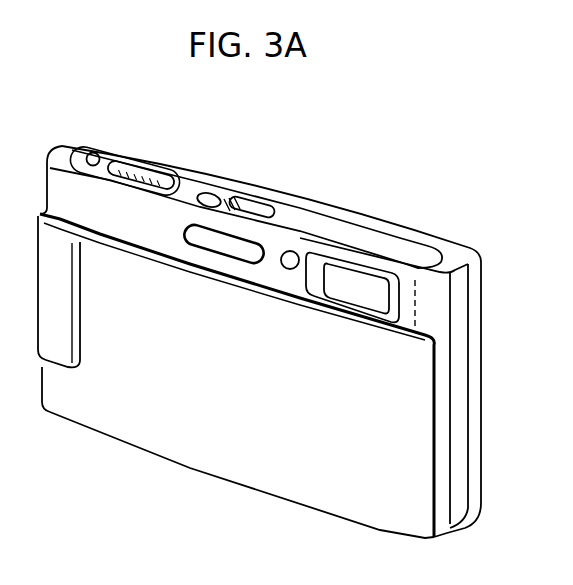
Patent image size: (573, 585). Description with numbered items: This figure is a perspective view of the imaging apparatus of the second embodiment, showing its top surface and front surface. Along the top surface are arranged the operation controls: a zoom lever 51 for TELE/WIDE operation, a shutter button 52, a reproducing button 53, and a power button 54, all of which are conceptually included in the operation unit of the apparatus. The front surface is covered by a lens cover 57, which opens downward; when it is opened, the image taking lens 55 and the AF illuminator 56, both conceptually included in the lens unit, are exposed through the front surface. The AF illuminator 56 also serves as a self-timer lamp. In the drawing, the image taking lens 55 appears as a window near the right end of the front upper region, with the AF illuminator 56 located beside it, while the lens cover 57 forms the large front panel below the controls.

The zoom lever 51 is at (82, 153).
The shutter button 52 is at (126, 165).
The reproducing button 53 is at (208, 192).
The power button 54 is at (260, 205).
The image taking lens 55 is at (377, 297).
The AF illuminator 56 is at (291, 257).
The lens cover 57 is at (407, 437).